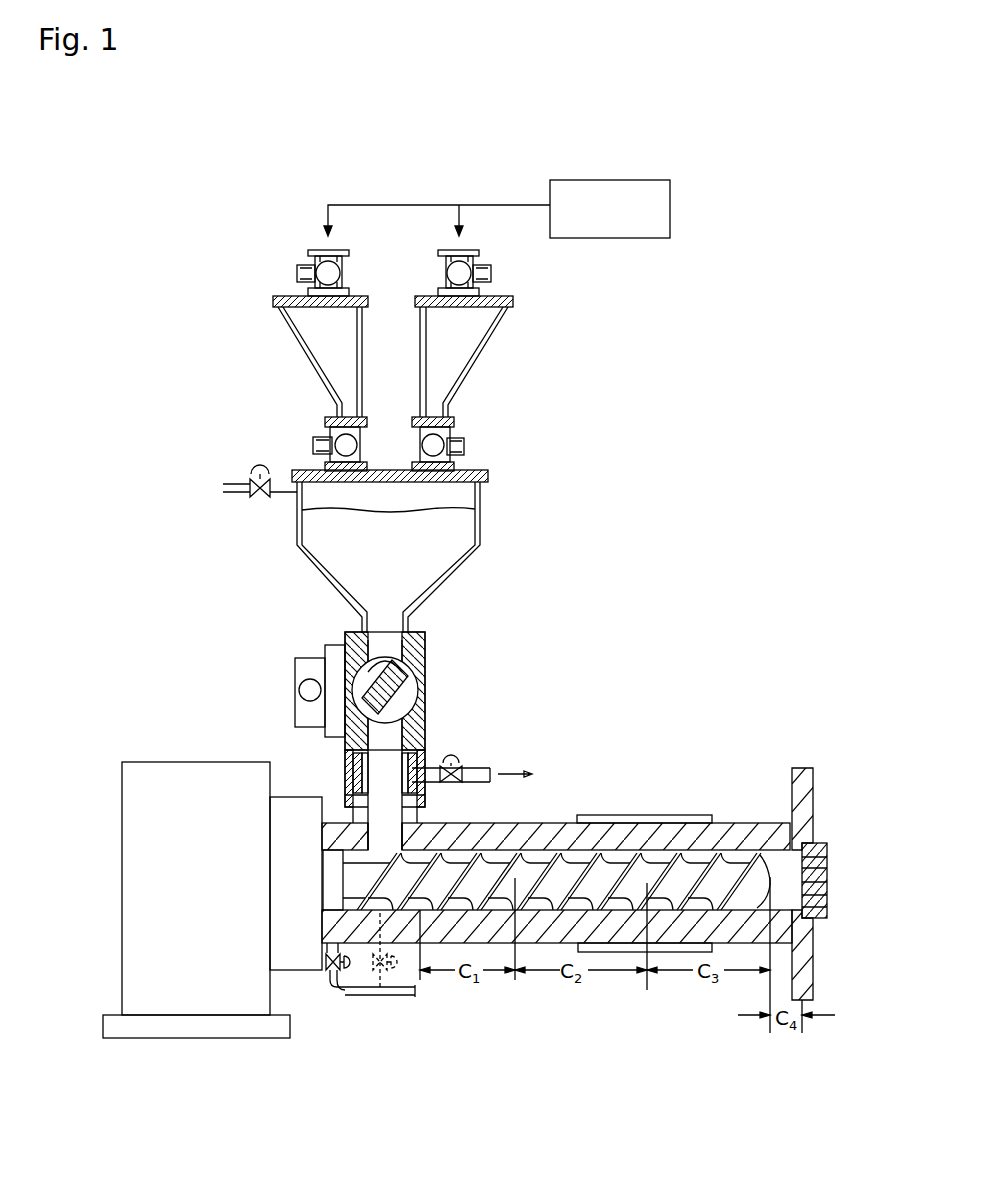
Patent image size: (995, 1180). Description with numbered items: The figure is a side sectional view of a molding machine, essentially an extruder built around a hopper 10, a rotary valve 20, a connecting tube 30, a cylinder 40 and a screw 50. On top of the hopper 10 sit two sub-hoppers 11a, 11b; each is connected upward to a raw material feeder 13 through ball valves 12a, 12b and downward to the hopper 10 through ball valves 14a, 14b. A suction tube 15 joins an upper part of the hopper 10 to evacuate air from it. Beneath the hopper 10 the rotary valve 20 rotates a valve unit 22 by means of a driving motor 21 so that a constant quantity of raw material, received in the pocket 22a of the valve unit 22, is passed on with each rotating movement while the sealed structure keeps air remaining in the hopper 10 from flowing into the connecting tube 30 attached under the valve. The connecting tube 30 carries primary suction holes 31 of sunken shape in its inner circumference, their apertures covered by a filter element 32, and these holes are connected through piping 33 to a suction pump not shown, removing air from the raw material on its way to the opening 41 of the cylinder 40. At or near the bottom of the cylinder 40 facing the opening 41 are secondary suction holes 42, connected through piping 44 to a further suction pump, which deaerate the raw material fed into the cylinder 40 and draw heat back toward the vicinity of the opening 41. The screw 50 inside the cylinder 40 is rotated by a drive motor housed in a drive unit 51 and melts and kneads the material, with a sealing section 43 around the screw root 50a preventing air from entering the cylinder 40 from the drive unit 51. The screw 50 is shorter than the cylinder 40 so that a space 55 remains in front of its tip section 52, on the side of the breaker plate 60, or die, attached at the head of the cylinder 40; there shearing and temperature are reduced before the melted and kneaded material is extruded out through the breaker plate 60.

The hopper 10 is at (477, 530).
The sub-hopper 11a is at (320, 352).
The sub-hopper 11b is at (460, 357).
The ball valve 12a is at (327, 272).
The ball valve 12b is at (459, 275).
The raw material feeder 13 is at (664, 240).
The ball valve 14a is at (336, 443).
The ball valve 14b is at (434, 442).
The suction tube 15 is at (238, 496).
The rotary valve 20 is at (401, 661).
The driving motor 21 is at (295, 670).
The valve unit 22 is at (425, 655).
The pocket 22a is at (385, 668).
The connecting tube 30 is at (376, 750).
The primary suction holes 31 is at (347, 783).
The filter element 32 is at (347, 777).
The piping 33 is at (480, 772).
The cylinder 40 is at (557, 855).
The opening 41 is at (388, 843).
The secondary suction holes 42 is at (325, 943).
The sealing section 43 is at (274, 973).
The piping 44 is at (417, 988).
The screw 50 is at (535, 939).
The screw root 50a is at (330, 893).
The drive unit 51 is at (128, 820).
The tip section 52 is at (728, 867).
The space 55 is at (782, 863).
The breaker plate 60 is at (827, 845).